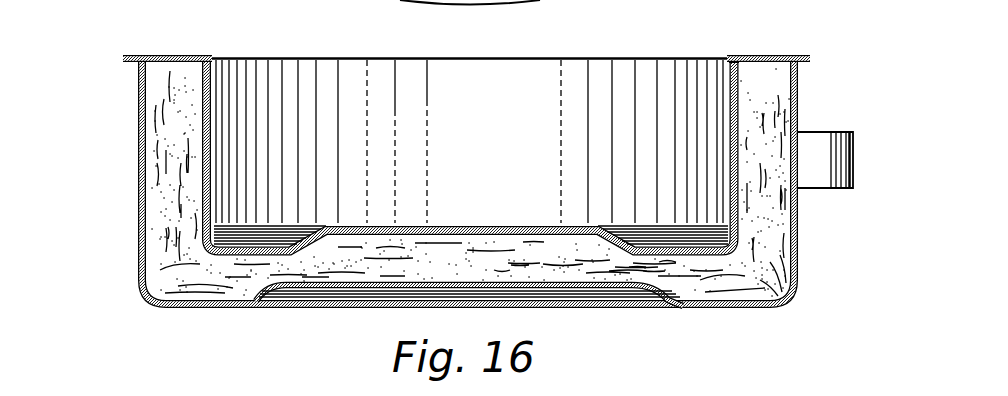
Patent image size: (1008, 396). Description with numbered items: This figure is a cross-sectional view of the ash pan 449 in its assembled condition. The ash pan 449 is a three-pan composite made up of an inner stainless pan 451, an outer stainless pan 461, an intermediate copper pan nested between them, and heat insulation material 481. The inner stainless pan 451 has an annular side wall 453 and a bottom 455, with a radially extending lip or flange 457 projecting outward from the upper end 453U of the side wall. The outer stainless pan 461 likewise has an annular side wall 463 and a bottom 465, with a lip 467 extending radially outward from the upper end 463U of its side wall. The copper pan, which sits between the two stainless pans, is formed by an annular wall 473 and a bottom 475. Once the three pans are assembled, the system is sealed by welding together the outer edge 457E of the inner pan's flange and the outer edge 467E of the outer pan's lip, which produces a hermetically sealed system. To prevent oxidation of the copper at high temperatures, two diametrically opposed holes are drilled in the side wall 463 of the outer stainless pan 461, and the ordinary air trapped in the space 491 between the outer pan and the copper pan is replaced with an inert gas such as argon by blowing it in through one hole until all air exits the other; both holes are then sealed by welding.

The ash pan 449 is at (420, 52).
The inner stainless pan 451 is at (213, 117).
The annular side wall 453 is at (725, 97).
The upper end 453U is at (725, 62).
The bottom 455 is at (490, 228).
The lip or flange 457 is at (770, 60).
The outer edge 457E is at (865, 39).
The outer stainless pan 461 is at (797, 243).
The annular side wall 463 is at (202, 170).
The upper end 463U is at (798, 72).
The bottom 465 is at (708, 308).
The lip 467 is at (140, 70).
The outer edge 467E is at (125, 67).
The annular wall 473 is at (845, 184).
The bottom 475 is at (245, 260).
The heat insulation material 481 is at (760, 213).
The space 491 is at (790, 290).